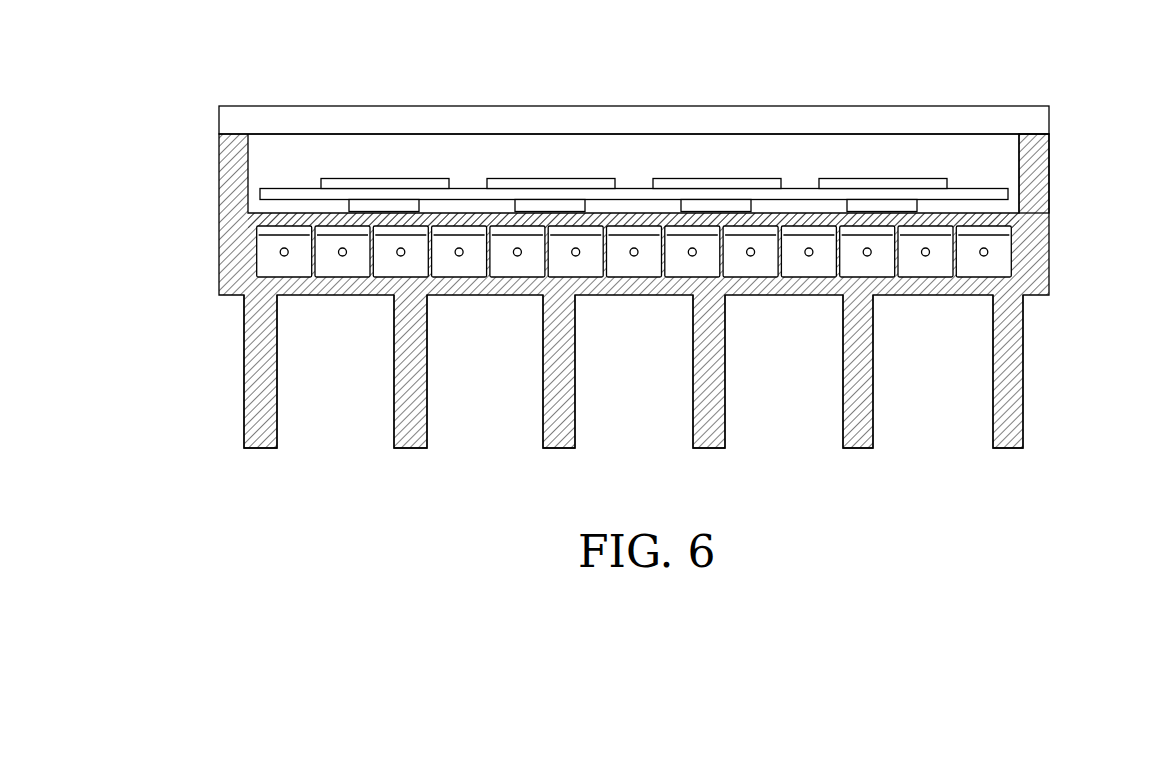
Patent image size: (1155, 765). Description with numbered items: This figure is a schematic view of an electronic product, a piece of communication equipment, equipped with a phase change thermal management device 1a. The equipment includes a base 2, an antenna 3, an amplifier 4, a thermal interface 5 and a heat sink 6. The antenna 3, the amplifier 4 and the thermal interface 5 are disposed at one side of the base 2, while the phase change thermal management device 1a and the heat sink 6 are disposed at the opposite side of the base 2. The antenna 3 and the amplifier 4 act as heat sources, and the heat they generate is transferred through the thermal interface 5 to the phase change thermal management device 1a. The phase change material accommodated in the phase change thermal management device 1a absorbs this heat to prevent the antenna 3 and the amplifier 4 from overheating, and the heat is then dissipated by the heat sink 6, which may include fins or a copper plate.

The phase change thermal management device 1a is at (219, 250).
The base 2 is at (1043, 173).
The antenna 3 is at (907, 182).
The amplifier 4 is at (918, 204).
The thermal interface 5 is at (903, 211).
The heat sink 6 is at (244, 376).